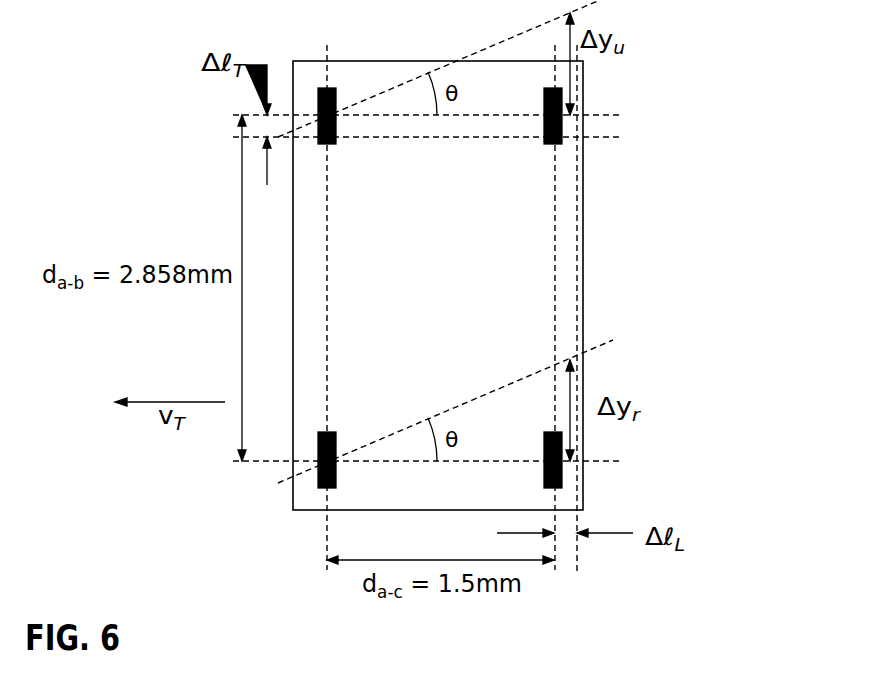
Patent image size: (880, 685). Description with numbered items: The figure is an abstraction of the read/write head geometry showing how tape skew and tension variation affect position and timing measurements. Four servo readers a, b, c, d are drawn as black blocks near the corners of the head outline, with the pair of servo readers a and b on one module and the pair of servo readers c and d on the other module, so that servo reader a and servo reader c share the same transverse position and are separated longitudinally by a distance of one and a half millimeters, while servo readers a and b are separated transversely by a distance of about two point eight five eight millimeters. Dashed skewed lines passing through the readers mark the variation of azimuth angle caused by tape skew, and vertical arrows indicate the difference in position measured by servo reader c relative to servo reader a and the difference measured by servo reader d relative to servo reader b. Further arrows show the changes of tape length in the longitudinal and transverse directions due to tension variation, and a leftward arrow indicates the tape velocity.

The servo reader a is at (335, 129).
The servo reader b is at (335, 469).
The servo reader c is at (547, 129).
The servo reader d is at (542, 469).